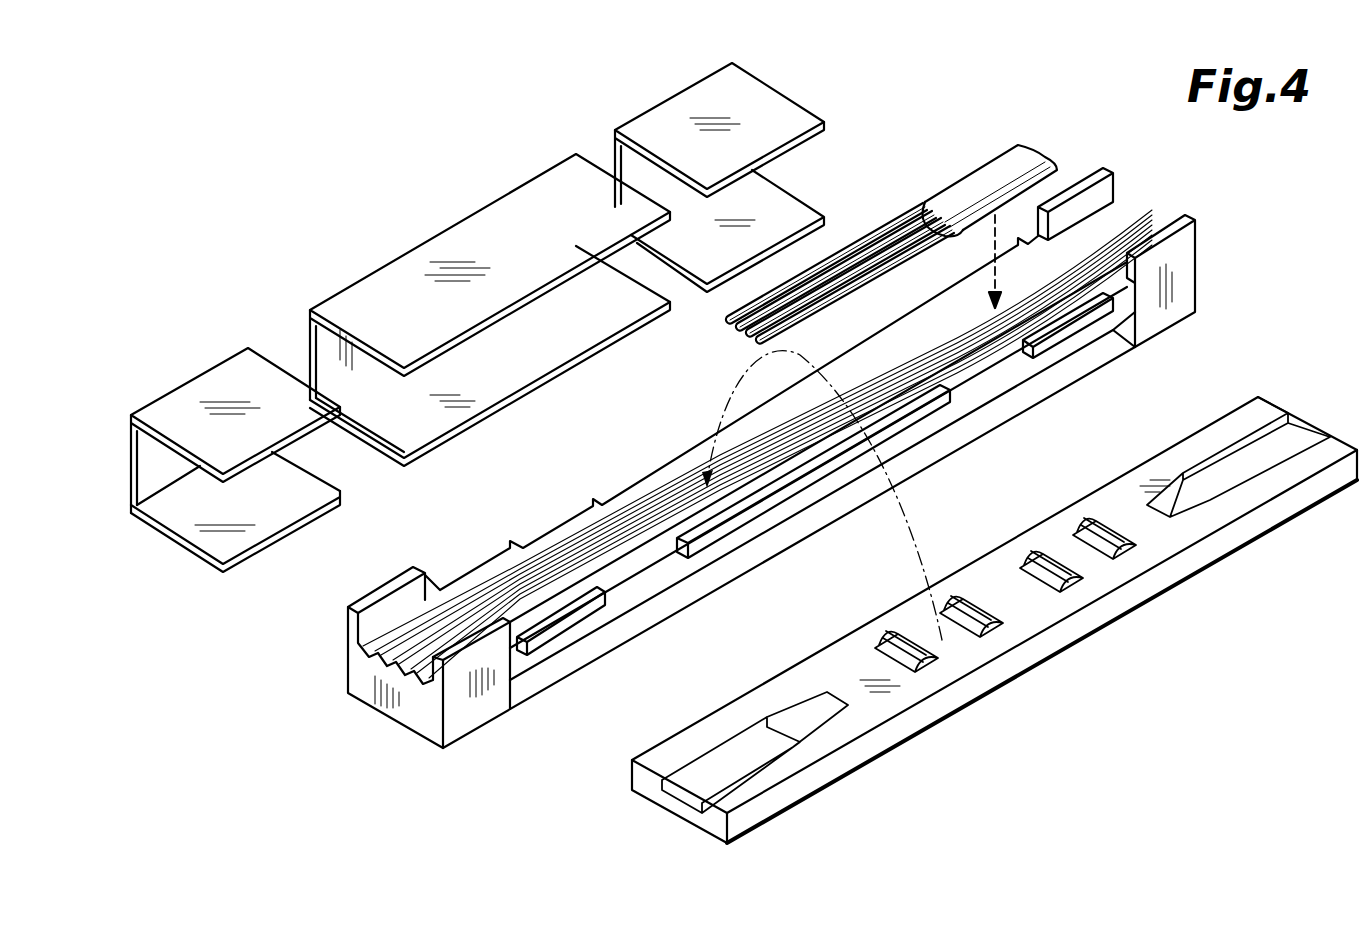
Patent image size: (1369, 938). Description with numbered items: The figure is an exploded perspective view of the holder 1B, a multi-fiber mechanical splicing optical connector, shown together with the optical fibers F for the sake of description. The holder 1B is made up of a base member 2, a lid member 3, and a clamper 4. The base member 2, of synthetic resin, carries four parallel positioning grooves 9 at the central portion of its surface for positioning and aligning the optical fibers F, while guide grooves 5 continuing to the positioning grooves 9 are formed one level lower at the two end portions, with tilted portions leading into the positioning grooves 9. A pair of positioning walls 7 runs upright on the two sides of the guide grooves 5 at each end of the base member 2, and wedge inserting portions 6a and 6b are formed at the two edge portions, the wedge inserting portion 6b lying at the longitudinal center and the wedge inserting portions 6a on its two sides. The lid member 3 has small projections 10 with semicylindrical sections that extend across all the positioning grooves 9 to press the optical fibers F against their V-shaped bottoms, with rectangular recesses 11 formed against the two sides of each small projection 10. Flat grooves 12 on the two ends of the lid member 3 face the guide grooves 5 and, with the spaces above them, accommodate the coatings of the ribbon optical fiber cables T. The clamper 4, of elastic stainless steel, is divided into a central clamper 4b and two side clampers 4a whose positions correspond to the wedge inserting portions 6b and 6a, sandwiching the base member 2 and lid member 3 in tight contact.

The holder 1B is at (648, 906).
The base member 2 is at (970, 416).
The lid member 3 is at (1125, 597).
The clamper 4 is at (637, 25).
The clampers 4a is at (210, 390).
The clamper 4b is at (430, 263).
The guide grooves 5 is at (506, 594).
The wedge inserting portions 6a is at (567, 620).
The wedge inserting portion 6b is at (826, 472).
The positioning walls 7 is at (387, 598).
The positioning grooves 9 is at (680, 492).
The small projections 10 is at (940, 613).
The recess 11 is at (903, 672).
The flat grooves 12 is at (722, 768).
The optical fibers F is at (838, 260).
The ribbon optical fiber cables T is at (968, 193).